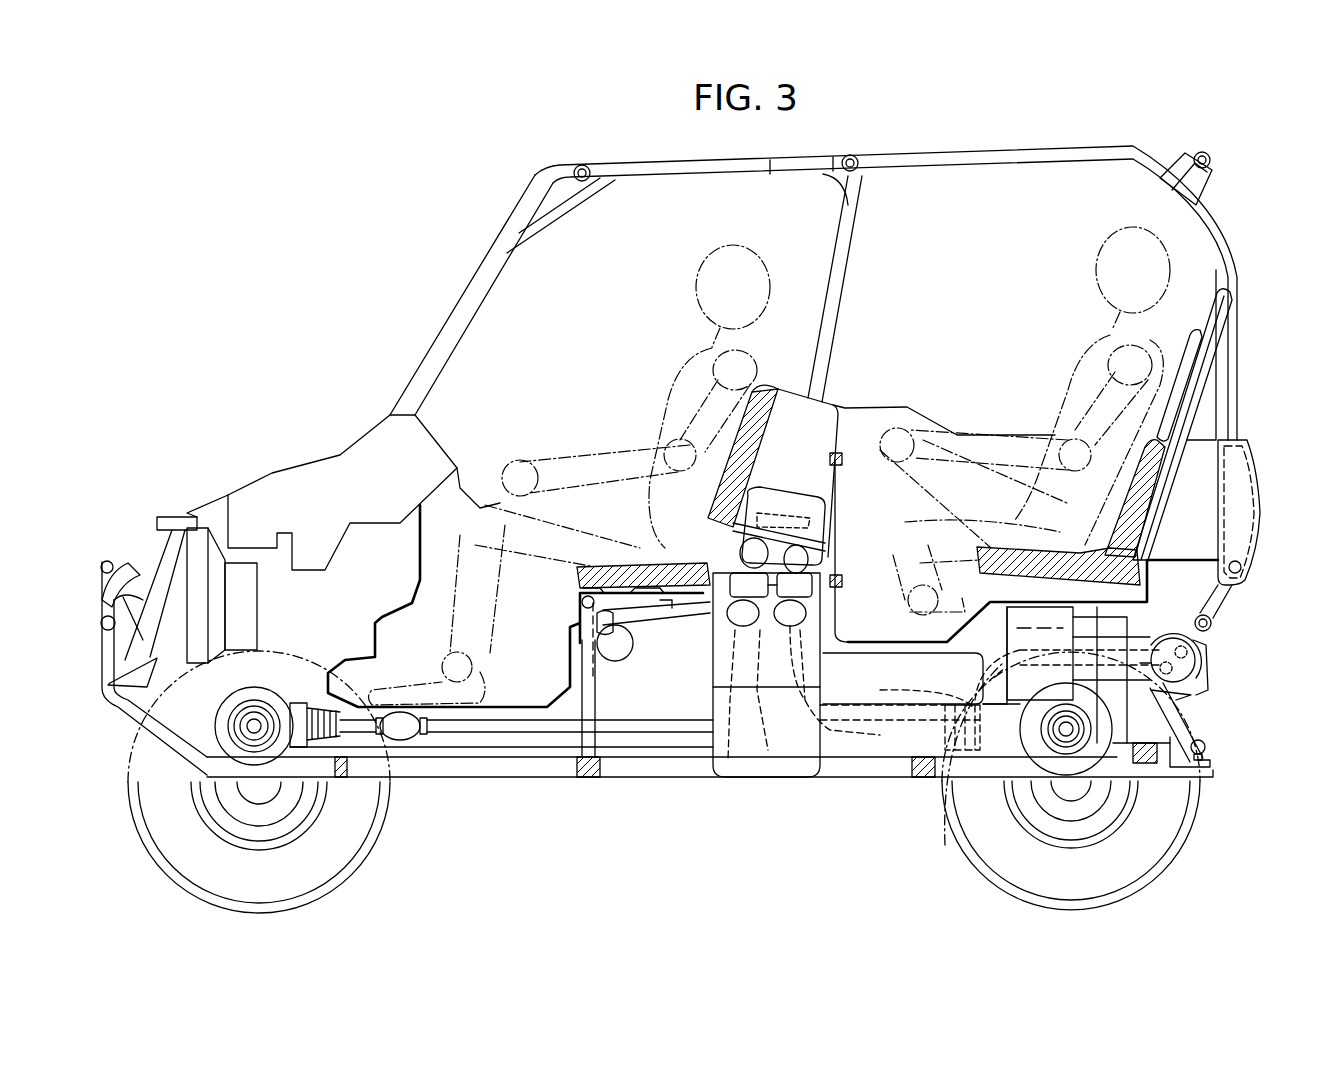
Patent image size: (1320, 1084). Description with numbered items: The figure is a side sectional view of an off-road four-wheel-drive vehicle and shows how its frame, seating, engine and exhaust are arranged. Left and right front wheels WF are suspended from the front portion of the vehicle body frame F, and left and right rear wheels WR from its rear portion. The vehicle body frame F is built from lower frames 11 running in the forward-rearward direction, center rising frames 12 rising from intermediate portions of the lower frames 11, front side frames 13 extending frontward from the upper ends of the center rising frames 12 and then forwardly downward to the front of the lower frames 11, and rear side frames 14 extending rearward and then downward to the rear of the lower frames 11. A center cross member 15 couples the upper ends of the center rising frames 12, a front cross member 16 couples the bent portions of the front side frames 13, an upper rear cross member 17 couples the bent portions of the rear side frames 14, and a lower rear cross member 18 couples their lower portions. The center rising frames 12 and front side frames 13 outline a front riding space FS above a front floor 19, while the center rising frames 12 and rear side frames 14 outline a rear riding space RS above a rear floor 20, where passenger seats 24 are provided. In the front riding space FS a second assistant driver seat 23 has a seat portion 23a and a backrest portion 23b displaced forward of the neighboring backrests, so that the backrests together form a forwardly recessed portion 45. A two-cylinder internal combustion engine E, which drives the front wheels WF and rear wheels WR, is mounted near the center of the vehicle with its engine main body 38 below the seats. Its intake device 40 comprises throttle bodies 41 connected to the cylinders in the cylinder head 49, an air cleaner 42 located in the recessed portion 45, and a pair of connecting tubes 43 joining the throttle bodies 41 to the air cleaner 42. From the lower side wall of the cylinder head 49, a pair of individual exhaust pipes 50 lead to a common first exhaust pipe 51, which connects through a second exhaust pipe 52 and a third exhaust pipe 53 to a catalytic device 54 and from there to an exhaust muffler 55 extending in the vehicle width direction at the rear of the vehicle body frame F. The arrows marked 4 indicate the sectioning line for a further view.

The lower frames 11 is at (468, 770).
The center rising frames 12 is at (827, 290).
The front side frames 13 is at (437, 345).
The rear side frames 14 is at (1017, 151).
The center cross member 15 is at (840, 198).
The front cross member 16 is at (580, 166).
The upper rear cross member 17 is at (1210, 150).
The lower rear cross member 18 is at (1203, 615).
The front floor 19 is at (525, 714).
The rear floor 20 is at (913, 648).
The second assistant driver seat 23 is at (682, 493).
The seat portion 23a is at (697, 553).
The backrest portion 23b is at (770, 385).
The passenger seats 24 is at (1050, 557).
The engine main body 38 is at (829, 671).
The intake device 40 is at (778, 485).
The throttle bodies 41 is at (743, 580).
The air cleaner 42 is at (753, 407).
The connecting tubes 43 is at (813, 460).
The recessed portion 45 is at (820, 410).
The cylinder head 49 is at (757, 632).
The individual exhaust pipes 50 is at (877, 733).
The first exhaust pipe 51 is at (987, 803).
The second exhaust pipe 52 is at (990, 680).
The third exhaust pipe 53 is at (1090, 645).
The catalytic device 54 is at (1185, 712).
The exhaust muffler 55 is at (1204, 658).
The section line 4 is at (1032, 622).
The internal combustion engine E is at (827, 565).
The vehicle body frame F is at (622, 782).
The front riding space FS is at (609, 316).
The rear riding space RS is at (1012, 315).
The front wheels WF is at (367, 803).
The rear wheels WR is at (1167, 823).